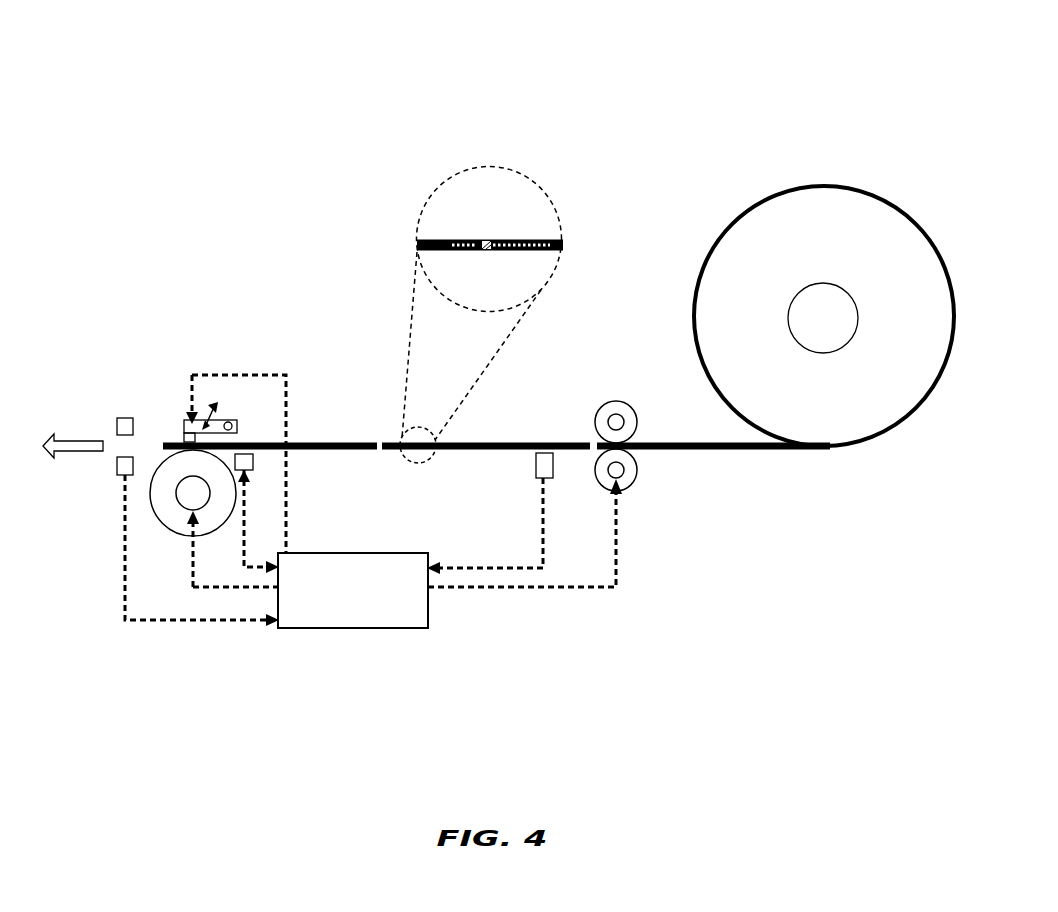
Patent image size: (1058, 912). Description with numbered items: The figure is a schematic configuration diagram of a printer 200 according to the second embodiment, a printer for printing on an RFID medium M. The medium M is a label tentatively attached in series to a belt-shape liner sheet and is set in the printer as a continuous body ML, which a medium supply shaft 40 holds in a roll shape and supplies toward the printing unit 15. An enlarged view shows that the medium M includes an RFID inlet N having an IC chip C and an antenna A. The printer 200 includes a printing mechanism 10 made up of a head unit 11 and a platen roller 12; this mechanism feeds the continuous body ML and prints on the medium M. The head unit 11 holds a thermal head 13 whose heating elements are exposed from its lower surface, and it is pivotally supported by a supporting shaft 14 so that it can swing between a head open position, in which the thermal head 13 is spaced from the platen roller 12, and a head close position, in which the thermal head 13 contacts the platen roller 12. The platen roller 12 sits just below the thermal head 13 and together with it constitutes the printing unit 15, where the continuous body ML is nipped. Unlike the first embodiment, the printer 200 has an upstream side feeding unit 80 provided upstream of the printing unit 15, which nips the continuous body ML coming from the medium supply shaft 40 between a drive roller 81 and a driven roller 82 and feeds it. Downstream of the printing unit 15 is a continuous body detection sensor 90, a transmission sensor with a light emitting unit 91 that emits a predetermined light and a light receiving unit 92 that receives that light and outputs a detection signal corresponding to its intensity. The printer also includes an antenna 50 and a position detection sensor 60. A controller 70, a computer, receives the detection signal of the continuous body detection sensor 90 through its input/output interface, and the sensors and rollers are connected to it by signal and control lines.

The printer 200 is at (620, 128).
The printing mechanism 10 is at (132, 388).
The head unit 11 is at (183, 420).
The platen roller 12 is at (158, 520).
The thermal head 13 is at (184, 436).
The supporting shaft 14 is at (228, 421).
The printing unit 15 is at (162, 437).
The medium supply shaft 40 is at (843, 283).
The antenna 50 is at (248, 472).
The position detection sensor 60 is at (537, 477).
The controller 70 is at (348, 628).
The upstream side feeding unit 80 is at (635, 502).
The drive roller 81 is at (635, 490).
The driven roller 82 is at (622, 402).
The continuous body detection sensor 90 is at (110, 482).
The light emitting unit 91 is at (117, 425).
The light receiving unit 92 is at (117, 465).
The medium M is at (362, 440).
The continuous body ML is at (837, 465).
The RFID inlet N is at (507, 232).
The antenna A is at (473, 240).
The IC chip C is at (490, 240).